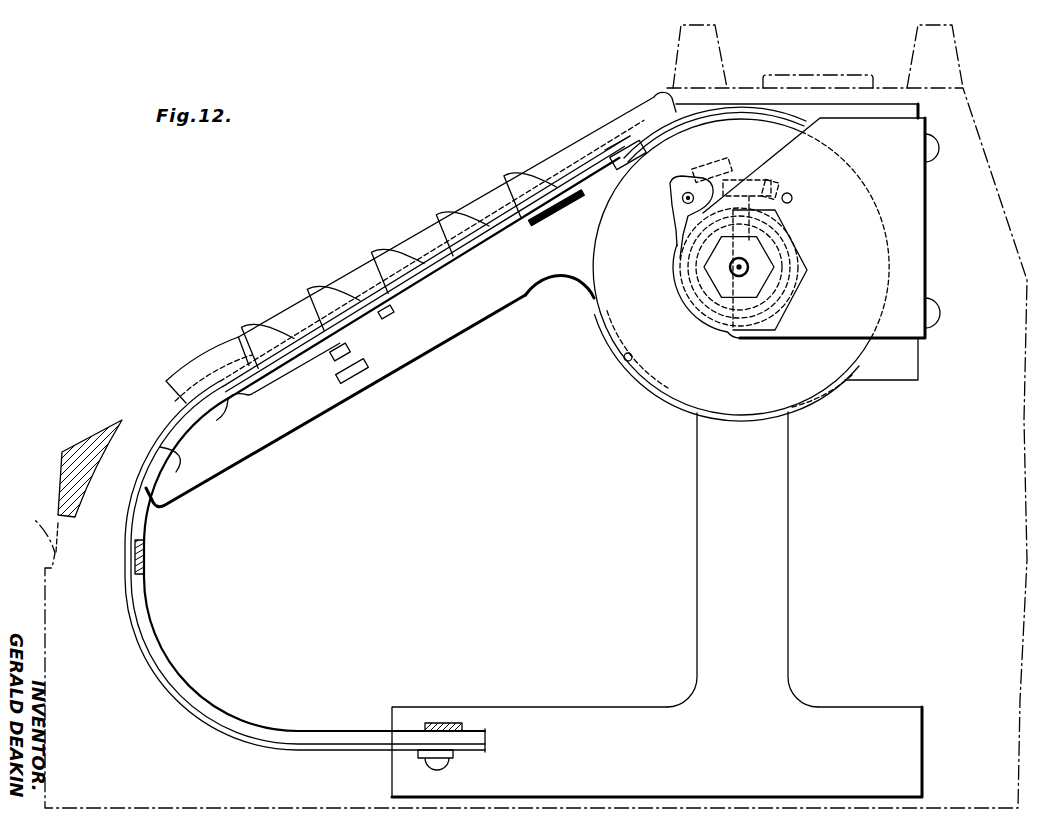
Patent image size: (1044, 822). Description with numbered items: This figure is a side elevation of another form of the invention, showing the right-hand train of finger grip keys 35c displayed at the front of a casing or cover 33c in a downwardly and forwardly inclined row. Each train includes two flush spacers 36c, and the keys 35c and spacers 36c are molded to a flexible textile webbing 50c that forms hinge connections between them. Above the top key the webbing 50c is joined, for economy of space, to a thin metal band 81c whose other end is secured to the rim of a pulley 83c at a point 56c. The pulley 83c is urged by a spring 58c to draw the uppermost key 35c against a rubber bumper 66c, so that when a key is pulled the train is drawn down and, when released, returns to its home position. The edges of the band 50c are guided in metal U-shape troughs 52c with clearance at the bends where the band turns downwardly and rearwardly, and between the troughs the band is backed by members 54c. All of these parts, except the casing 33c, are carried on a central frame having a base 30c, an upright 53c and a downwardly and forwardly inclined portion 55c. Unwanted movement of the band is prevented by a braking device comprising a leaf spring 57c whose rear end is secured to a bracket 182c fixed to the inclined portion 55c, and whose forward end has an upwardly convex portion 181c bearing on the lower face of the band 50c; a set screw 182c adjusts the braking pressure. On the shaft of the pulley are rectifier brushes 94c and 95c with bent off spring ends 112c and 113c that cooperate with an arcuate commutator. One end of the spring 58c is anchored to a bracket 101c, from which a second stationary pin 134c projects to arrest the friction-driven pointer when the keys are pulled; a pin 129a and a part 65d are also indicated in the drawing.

The base 30c is at (547, 727).
The casing or cover 33c is at (31, 523).
The finger grip keys 35c is at (350, 297).
The flush spacers 36c is at (193, 362).
The webbing 50c is at (636, 145).
The U-shape troughs 52c is at (320, 748).
The upright 53c is at (788, 558).
The backing members 54c is at (531, 222).
The downwardly and forwardly inclined portion 55c is at (381, 385).
The attachment point 56c is at (624, 358).
The leaf spring 57c is at (283, 388).
The spring 58c is at (789, 253).
The wedge 65d is at (80, 444).
The bumper 66c is at (616, 156).
The thin metal band 81c is at (754, 123).
The pulley 83c is at (592, 268).
The rectifier brush 94c is at (680, 190).
The rectifier brush 95c is at (780, 182).
The bracket 101c is at (882, 181).
The bent off spring end 112c is at (716, 159).
The bent off spring end 113c is at (762, 180).
The pin 129a is at (793, 198).
The second stationary pin 134c is at (684, 203).
The upwardly convex portion 181c is at (237, 403).
The bracket 182c is at (392, 316).